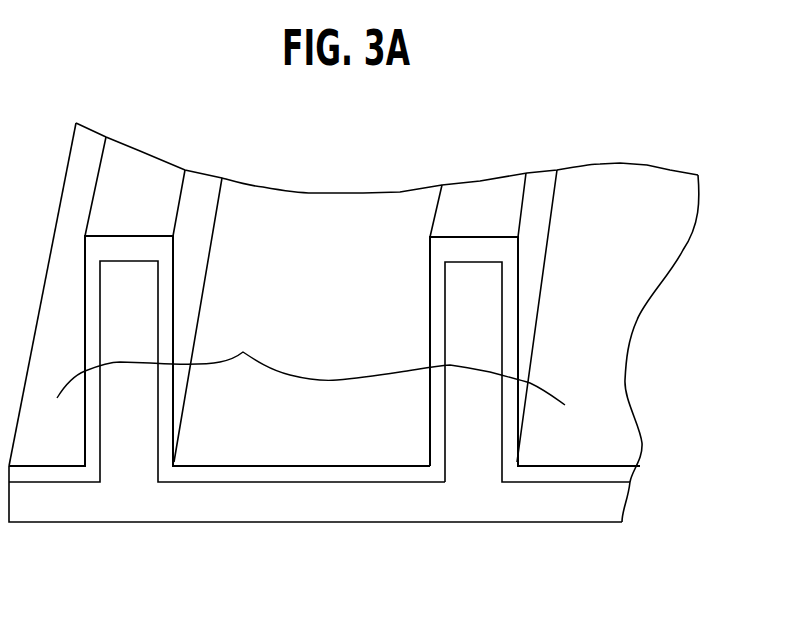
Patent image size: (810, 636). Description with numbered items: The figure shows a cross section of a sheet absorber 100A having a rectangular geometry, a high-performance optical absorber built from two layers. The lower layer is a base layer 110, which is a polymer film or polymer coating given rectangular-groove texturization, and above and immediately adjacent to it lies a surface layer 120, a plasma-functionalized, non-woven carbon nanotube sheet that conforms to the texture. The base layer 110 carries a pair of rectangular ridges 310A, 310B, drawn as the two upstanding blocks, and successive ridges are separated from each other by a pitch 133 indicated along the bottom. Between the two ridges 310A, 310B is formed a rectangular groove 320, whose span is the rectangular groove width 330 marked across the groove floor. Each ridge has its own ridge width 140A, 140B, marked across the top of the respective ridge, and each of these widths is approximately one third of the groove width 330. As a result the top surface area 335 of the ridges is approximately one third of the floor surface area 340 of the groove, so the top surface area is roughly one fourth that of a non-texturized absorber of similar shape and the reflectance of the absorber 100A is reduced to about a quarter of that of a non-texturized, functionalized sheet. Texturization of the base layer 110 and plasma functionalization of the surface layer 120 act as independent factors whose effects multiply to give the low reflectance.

The base layer 110 is at (533, 513).
The sheet absorber 100A is at (588, 596).
The top surface area 335 is at (483, 183).
The ridge width 140A is at (88, 251).
The ridge width 140B is at (433, 251).
The rectangular ridge 310A is at (106, 203).
The rectangular ridge 310B is at (458, 212).
The rectangular groove 320 is at (307, 308).
The floor surface area 340 is at (283, 392).
The rectangular groove width 330 is at (430, 447).
The pitch 133 is at (427, 555).
The surface layer 120 is at (715, 167).